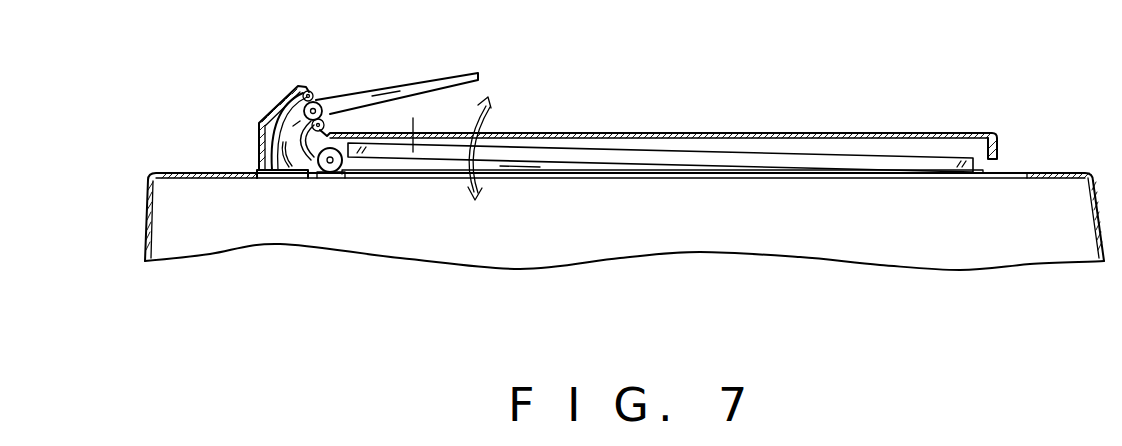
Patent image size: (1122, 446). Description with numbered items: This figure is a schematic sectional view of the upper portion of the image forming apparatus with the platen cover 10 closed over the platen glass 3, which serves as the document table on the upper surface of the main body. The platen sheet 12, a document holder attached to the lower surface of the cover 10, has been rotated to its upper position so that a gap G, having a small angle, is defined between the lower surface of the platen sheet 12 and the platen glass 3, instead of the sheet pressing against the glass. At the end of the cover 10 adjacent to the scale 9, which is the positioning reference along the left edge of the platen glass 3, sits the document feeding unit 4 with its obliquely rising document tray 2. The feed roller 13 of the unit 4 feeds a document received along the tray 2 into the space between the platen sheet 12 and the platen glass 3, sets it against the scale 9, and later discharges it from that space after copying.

The document tray 2 is at (443, 78).
The platen glass 3 is at (679, 178).
The document feeding unit 4 is at (383, 80).
The scale 9 is at (273, 178).
The platen cover 10 is at (704, 124).
The platen sheet 12 is at (566, 149).
The feed roller 13 is at (332, 175).
The gap G is at (516, 166).